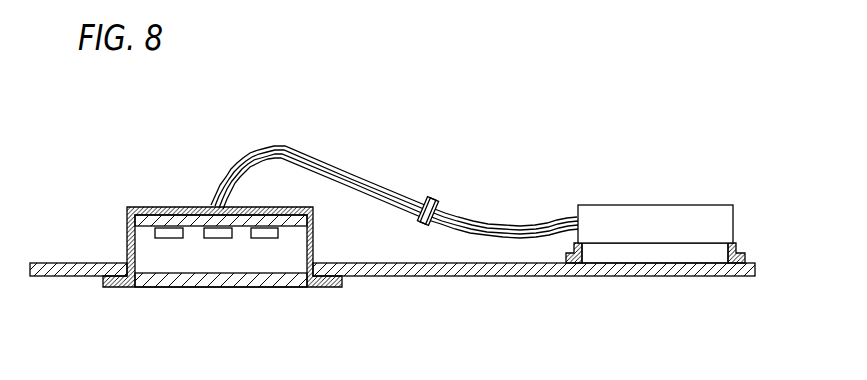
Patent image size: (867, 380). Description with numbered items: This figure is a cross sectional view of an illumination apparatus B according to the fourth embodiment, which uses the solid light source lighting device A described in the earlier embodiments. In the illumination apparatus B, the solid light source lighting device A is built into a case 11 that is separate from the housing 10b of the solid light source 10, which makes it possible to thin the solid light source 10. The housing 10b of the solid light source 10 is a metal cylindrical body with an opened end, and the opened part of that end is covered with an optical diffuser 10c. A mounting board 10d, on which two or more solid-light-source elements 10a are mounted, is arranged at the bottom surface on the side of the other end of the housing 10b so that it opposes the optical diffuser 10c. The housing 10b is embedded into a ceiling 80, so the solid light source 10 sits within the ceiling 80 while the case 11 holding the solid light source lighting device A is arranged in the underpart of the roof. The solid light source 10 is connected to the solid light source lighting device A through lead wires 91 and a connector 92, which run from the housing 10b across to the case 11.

The solid light source 10 is at (202, 252).
The solid-light-source elements 10a is at (260, 237).
The housing 10b is at (127, 226).
The optical diffuser 10c is at (153, 286).
The mounting board 10d is at (180, 222).
The case 11 is at (710, 217).
The ceiling 80 is at (502, 276).
The lead wires 91 is at (367, 178).
The connector 92 is at (434, 204).
The solid light source lighting device A is at (655, 205).
The illumination apparatus B is at (202, 207).